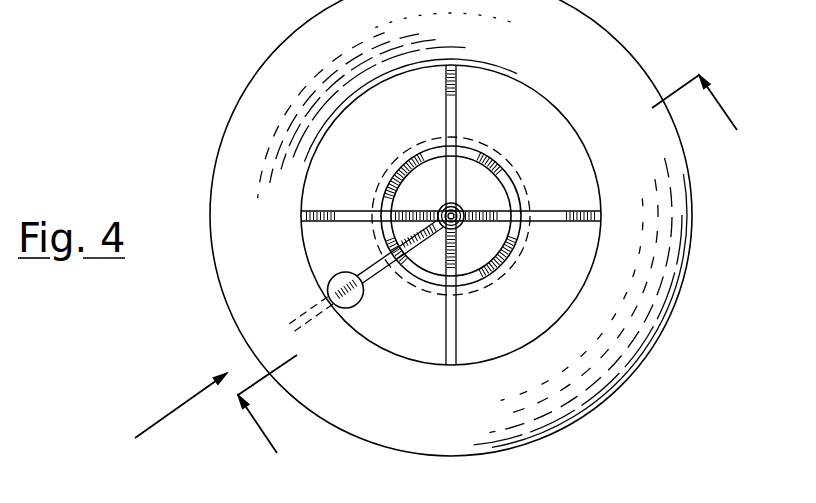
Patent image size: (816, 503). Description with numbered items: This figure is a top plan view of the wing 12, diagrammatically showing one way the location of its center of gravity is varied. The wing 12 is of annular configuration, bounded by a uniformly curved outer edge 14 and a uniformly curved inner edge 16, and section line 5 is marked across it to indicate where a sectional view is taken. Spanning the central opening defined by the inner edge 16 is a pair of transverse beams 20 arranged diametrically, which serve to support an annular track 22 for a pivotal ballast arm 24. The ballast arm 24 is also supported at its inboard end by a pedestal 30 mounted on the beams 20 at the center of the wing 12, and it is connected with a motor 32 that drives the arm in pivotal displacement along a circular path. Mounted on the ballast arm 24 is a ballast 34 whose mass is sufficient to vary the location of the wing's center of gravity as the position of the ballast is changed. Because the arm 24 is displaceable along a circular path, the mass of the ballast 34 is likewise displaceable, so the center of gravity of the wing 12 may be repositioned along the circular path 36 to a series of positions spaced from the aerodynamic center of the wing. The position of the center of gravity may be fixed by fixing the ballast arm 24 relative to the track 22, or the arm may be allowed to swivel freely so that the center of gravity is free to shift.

The section line 5- 5 is at (443, 276).
The wing 12 is at (675, 268).
The outer edge 14 is at (638, 60).
The inner edge 16 is at (547, 332).
The transverse beams 20 is at (456, 91).
The annular track 22 is at (488, 272).
The ballast arm 24 is at (370, 280).
The pedestal 30 is at (460, 203).
The motor 32 is at (456, 227).
The ballast 34 is at (343, 272).
The circular path 36 is at (483, 143).